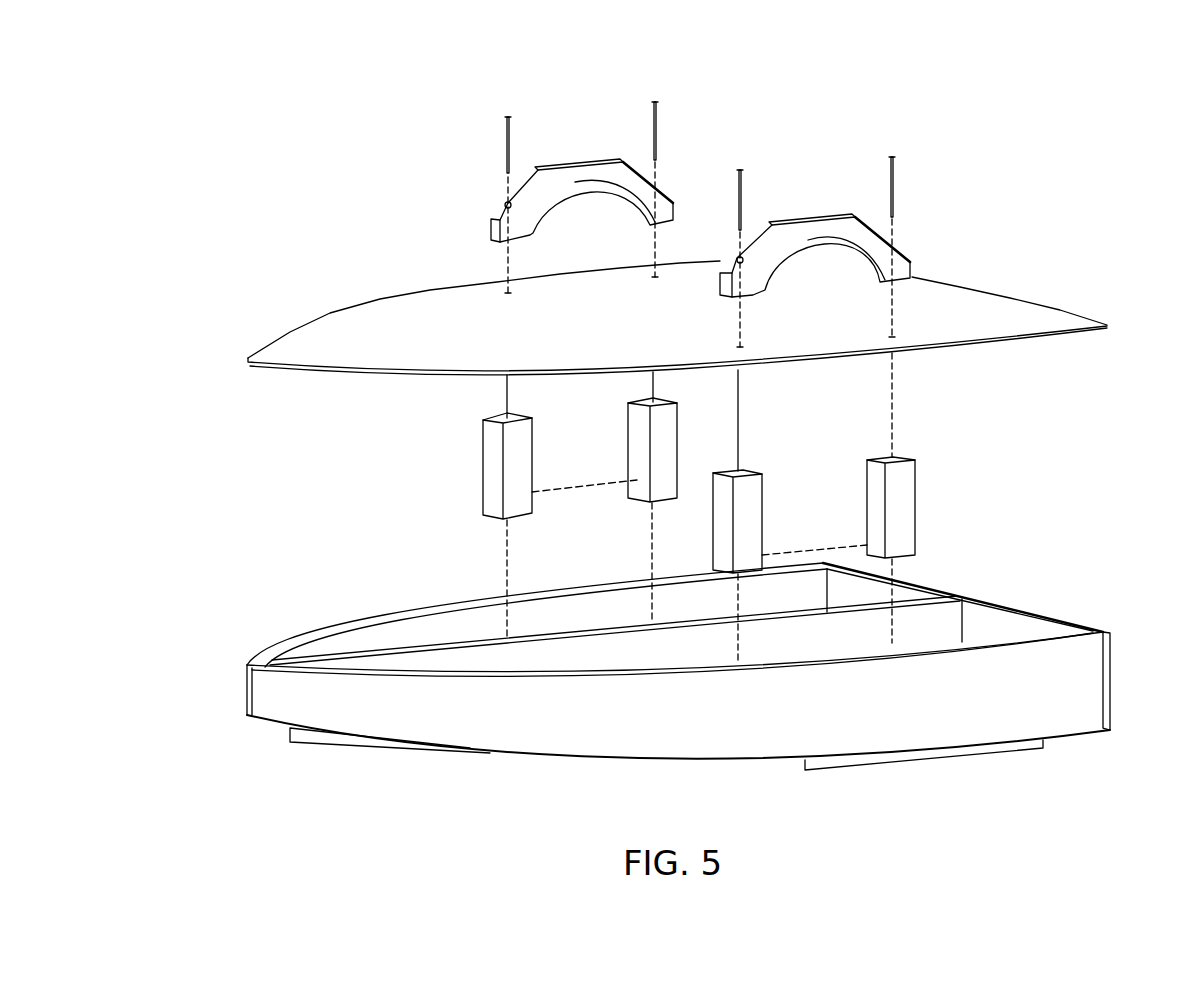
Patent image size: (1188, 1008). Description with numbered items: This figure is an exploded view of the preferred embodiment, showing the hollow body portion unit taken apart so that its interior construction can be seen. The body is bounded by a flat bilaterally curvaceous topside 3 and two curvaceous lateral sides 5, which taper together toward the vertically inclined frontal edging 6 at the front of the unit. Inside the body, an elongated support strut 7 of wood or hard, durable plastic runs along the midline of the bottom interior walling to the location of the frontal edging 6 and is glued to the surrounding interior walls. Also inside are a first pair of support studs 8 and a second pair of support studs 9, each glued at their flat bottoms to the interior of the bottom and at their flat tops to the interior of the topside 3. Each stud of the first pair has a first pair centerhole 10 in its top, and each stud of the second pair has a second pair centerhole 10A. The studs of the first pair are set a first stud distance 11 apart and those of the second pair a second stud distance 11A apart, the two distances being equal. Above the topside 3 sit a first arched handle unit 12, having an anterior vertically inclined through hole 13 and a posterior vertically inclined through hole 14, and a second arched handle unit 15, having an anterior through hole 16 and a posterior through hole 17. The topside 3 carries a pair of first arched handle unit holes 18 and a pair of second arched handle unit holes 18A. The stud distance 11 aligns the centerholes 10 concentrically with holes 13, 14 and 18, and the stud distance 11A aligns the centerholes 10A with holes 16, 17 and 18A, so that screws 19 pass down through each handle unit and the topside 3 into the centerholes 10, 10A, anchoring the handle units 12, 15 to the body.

The topside 3 is at (347, 342).
The lateral sides 5 is at (659, 693).
The frontal edging 6 is at (247, 715).
The elongated support strut 7 is at (768, 630).
The first pair of support studs 8 is at (866, 472).
The second pair of support studs 9 is at (590, 457).
The first pair centerhole 10 is at (737, 473).
The second pair centerhole 10A is at (516, 401).
The first stud distance 11 is at (823, 552).
The second stud distance 11A is at (580, 487).
The first arched handle unit 12 is at (860, 206).
The anterior vertically inclined through hole 13 is at (740, 257).
The posterior vertically inclined through hole 14 is at (893, 240).
The second arched handle unit 15 is at (594, 155).
The anterior vertically inclined through hole 16 is at (506, 201).
The posterior vertically inclined through hole 17 is at (657, 183).
The first arched handle unit holes 18 is at (736, 343).
The second arched handle unit holes 18A is at (506, 290).
The screws 19 is at (508, 115).